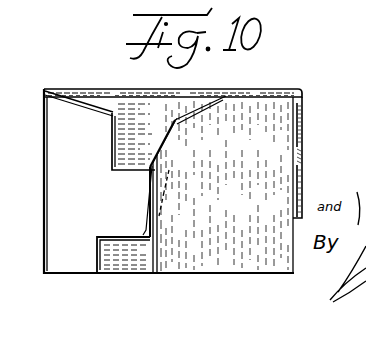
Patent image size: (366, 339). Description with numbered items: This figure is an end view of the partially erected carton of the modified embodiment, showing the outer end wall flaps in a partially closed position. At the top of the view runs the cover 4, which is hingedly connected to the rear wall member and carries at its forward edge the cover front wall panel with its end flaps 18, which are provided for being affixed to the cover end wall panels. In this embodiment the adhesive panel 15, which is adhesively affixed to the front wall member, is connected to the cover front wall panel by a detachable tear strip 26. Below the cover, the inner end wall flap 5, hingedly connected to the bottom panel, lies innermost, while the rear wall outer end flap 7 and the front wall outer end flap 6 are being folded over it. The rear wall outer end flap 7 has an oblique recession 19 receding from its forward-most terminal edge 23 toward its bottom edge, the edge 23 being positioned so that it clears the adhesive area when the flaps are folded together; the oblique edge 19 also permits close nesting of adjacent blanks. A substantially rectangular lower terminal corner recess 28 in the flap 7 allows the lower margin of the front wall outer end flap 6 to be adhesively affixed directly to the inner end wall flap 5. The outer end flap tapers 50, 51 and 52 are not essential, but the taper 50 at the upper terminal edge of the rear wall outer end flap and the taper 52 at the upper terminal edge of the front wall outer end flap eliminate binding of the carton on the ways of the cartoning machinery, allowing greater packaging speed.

The cover 4 is at (231, 95).
The inner end wall flap 5 is at (138, 115).
The front wall outer end flap 6 is at (252, 207).
The rear wall outer end flap 7 is at (91, 212).
The adhesive panel 15 is at (292, 203).
The end flap 18 is at (303, 118).
The oblique recession 19 is at (190, 221).
The forward-most terminal edge 23 is at (177, 185).
The detachable tear strip 26 is at (300, 168).
The lower terminal corner recess 28 is at (108, 244).
The outer end flap taper 50 is at (92, 108).
The outer end flap taper 51 is at (177, 140).
The outer end flap taper 52 is at (204, 111).